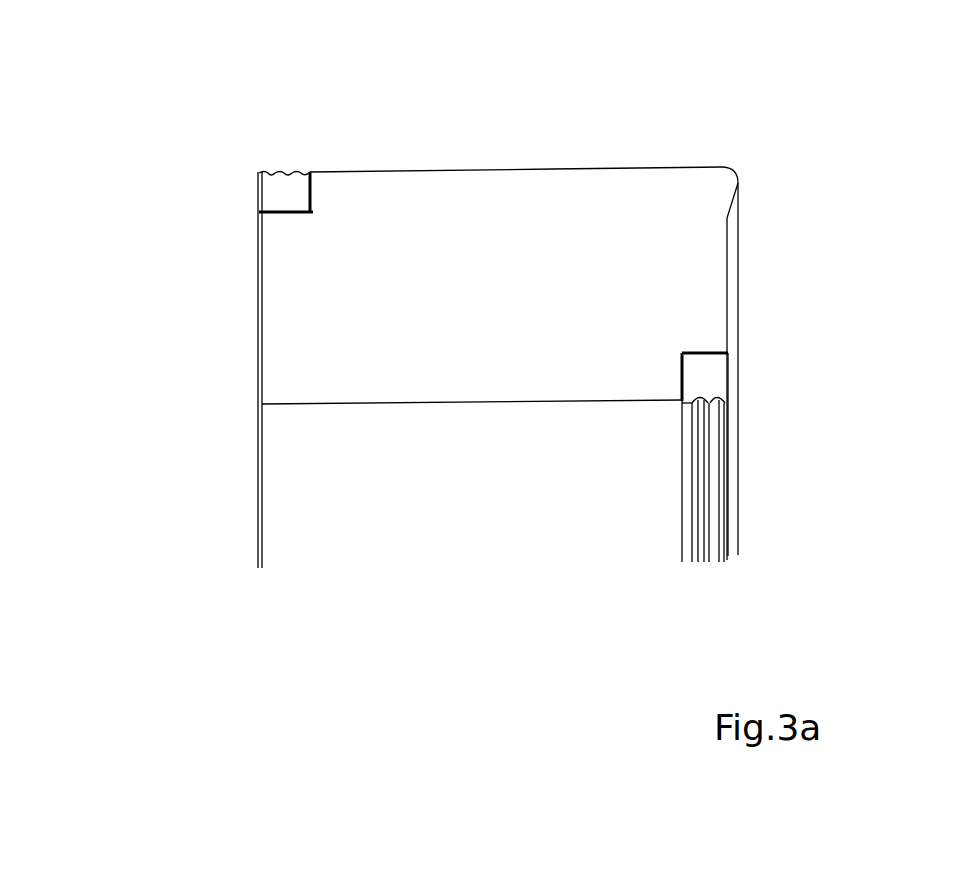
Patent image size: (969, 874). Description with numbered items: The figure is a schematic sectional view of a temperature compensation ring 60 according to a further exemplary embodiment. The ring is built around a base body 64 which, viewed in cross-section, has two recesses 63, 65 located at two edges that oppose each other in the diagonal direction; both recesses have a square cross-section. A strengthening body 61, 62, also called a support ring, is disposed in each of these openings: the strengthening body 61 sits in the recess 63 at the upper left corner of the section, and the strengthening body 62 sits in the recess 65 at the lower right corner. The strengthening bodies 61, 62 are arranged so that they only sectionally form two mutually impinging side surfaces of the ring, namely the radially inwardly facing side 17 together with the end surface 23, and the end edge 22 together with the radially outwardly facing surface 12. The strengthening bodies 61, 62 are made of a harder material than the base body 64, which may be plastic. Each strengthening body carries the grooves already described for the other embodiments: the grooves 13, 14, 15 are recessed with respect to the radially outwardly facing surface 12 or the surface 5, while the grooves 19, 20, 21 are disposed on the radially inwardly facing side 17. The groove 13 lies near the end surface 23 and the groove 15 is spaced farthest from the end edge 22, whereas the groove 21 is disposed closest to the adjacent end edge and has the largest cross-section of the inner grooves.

The surface 5 is at (627, 167).
The radially outwardly facing surface 12 is at (373, 170).
The groove 13 is at (270, 172).
The groove 14 is at (287, 172).
The groove 15 is at (302, 172).
The radially inwardly facing side 17 is at (497, 403).
The groove 19 is at (683, 502).
The groove 20 is at (700, 548).
The groove 21 is at (732, 557).
The end edge 22 is at (257, 287).
The end surface 23 is at (737, 333).
The temperature compensation ring 60 is at (480, 303).
The strengthening body 61 is at (217, 167).
The strengthening body 62 is at (679, 454).
The recess 63 is at (302, 212).
The base body 64 is at (553, 250).
The recess 65 is at (680, 373).